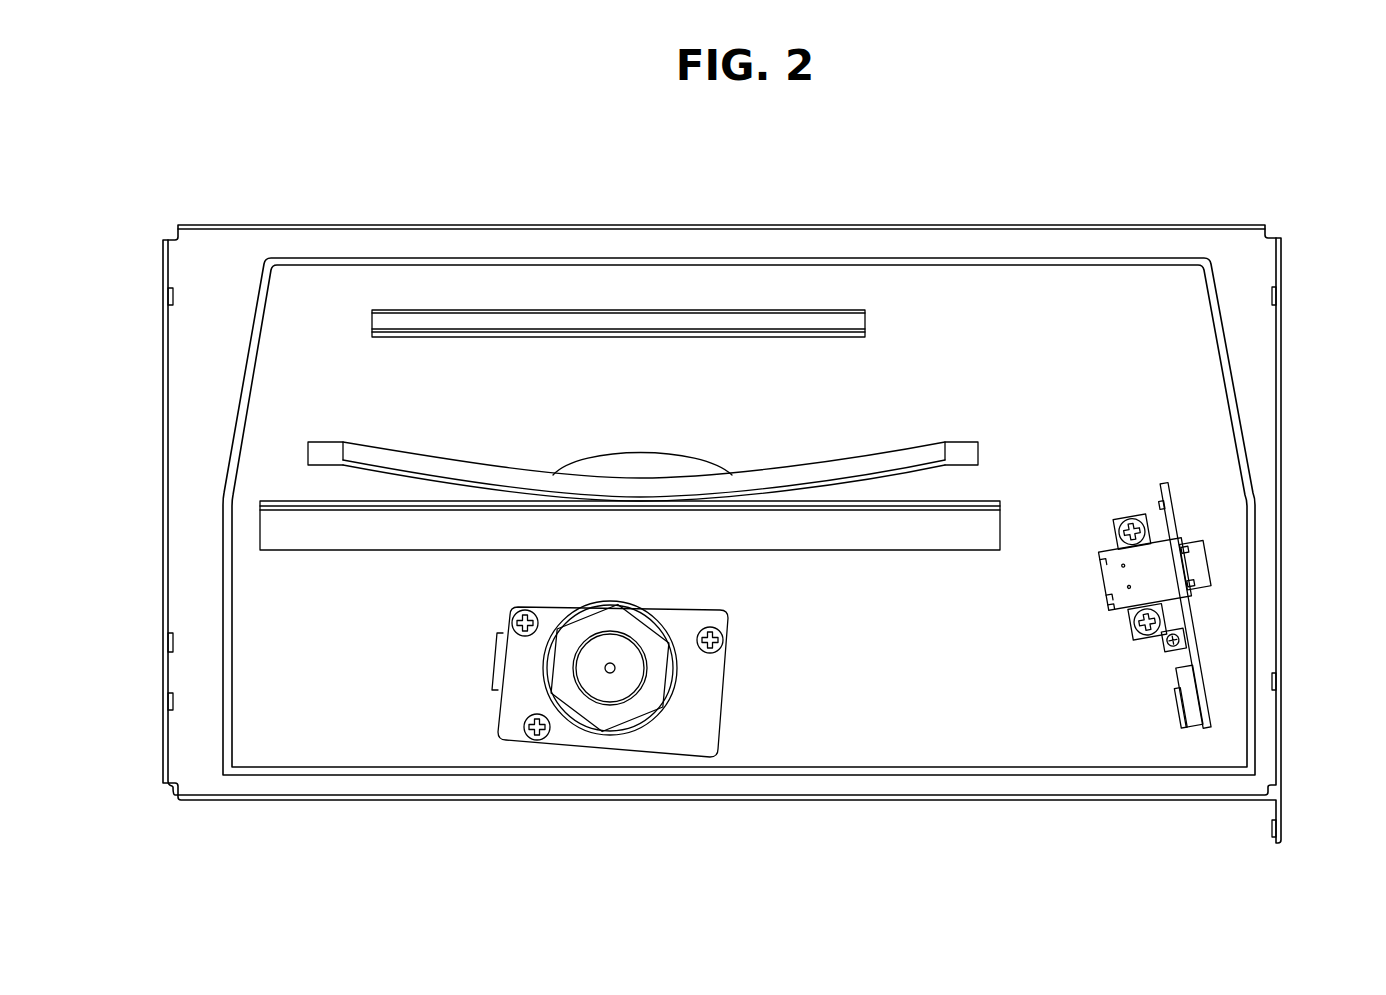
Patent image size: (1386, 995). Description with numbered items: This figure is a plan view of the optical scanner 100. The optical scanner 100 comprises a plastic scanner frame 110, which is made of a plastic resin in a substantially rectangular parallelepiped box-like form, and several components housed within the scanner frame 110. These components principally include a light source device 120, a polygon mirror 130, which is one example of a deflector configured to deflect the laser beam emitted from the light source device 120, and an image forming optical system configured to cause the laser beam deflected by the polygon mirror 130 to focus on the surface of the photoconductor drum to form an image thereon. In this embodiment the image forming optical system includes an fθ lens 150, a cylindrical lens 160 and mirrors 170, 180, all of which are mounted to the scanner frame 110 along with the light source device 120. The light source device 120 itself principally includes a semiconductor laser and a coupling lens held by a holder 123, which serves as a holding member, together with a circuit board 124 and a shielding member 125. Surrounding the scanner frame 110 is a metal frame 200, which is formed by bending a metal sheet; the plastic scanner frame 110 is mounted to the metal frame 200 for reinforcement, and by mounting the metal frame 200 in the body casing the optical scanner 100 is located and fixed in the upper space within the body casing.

The optical scanner 100 is at (1109, 158).
The scanner frame 110 is at (928, 260).
The light source device 120 is at (1210, 482).
The holder 123 is at (1132, 531).
The circuit board 124 is at (1175, 607).
The shielding member 125 is at (1195, 564).
The polygon mirror 130 is at (663, 692).
The fθ lens 150 is at (645, 460).
The cylindrical lens 160 is at (318, 452).
The mirror 170 is at (547, 317).
The mirror 180 is at (270, 528).
The metal frame 200 is at (1281, 268).